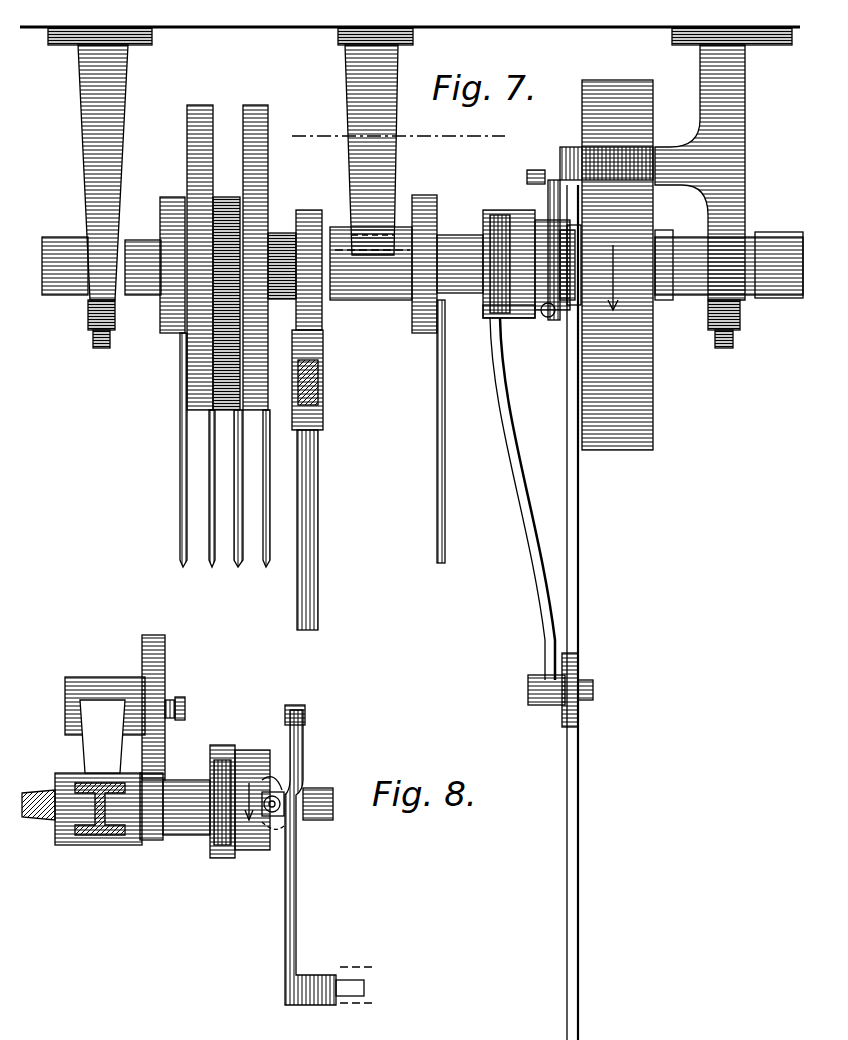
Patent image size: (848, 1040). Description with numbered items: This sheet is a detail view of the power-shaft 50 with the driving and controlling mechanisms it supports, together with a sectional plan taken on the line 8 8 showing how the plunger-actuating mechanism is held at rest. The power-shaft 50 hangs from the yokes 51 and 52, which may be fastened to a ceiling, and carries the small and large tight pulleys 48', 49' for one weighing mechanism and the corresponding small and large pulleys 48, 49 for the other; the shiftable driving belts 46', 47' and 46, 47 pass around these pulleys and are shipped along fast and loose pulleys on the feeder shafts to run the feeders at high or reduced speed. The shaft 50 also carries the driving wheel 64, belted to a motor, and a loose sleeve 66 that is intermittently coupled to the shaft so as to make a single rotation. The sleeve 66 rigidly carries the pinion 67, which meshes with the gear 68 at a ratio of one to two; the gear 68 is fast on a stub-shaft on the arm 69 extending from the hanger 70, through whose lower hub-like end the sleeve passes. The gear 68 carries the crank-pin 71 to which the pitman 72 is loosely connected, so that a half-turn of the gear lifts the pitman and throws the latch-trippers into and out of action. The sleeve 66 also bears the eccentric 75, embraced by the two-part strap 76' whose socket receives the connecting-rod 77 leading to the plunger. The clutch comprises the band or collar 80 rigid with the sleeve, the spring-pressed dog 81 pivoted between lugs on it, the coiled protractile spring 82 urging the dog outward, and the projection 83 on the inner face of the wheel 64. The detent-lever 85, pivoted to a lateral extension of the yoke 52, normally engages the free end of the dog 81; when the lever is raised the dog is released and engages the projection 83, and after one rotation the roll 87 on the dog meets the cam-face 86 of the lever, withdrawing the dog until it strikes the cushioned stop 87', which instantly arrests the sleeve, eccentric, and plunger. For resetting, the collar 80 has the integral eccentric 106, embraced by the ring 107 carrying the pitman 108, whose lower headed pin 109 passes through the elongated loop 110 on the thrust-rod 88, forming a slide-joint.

In FIG. 7, the section line 8 8 is at (397, 137).
In FIG. 7, the driving belt 46 is at (163, 450).
In FIG. 7, the driving belt 46' is at (223, 506).
In FIG. 7, the driving belt 47 is at (176, 488).
In FIG. 7, the driving belt 47' is at (266, 506).
In FIG. 7, the small tight pulley 48 is at (161, 251).
In FIG. 7, the small tight pulley 48' is at (194, 275).
In FIG. 7, the large tight pulley 49 is at (197, 244).
In FIG. 7, the large tight pulley 49' is at (254, 244).
In FIG. 7, the power-shaft 50 is at (45, 272).
In FIG. 8, the power-shaft 50 is at (334, 810).
In FIG. 7, the hanger or yoke 51 is at (90, 140).
In FIG. 7, the hanger or yoke 52 is at (730, 125).
In FIG. 7, the driving wheel or pulley 64 is at (645, 415).
In FIG. 7, the loose sleeve or hub 66 is at (450, 240).
In FIG. 8, the loose sleeve or hub 66 is at (178, 836).
In FIG. 7, the pinion 67 is at (406, 256).
In FIG. 8, the pinion 67 is at (154, 843).
In FIG. 7, the gear 68 is at (425, 335).
In FIG. 8, the gear 68 is at (165, 660).
In FIG. 8, the arm 69 is at (105, 725).
In FIG. 7, the hanger 70 is at (375, 141).
In FIG. 8, the hanger 70 is at (95, 846).
In FIG. 8, the crank or wrist pin 71 is at (186, 707).
In FIG. 7, the pitman or rod 72 is at (440, 434).
In FIG. 8, the pitman or rod 72 is at (174, 700).
In FIG. 7, the eccentric 75 is at (320, 403).
In FIG. 7, the two-part ring or strap 76' is at (325, 307).
In FIG. 7, the connecting-rod 77 is at (318, 522).
In FIG. 7, the band or collar 80 is at (528, 326).
In FIG. 8, the band or collar 80 is at (250, 852).
In FIG. 7, the spring-pressed dog 81 is at (565, 300).
In FIG. 8, the spring-pressed dog 81 is at (275, 794).
In FIG. 7, the coiled protractile spring 82 is at (498, 230).
In FIG. 7, the projection or protuberance 83 is at (572, 252).
In FIG. 7, the detent lever 85 is at (540, 175).
In FIG. 8, the detent lever 85 is at (297, 915).
In FIG. 8, the cam-face 86 is at (298, 778).
In FIG. 8, the roll 87 is at (249, 771).
In FIG. 8, the stop or abutment 87' is at (300, 838).
In FIG. 7, the thrust-rod 88 is at (575, 596).
In FIG. 7, the eccentric 106 is at (487, 312).
In FIG. 8, the eccentric 106 is at (210, 858).
In FIG. 7, the ring 107 is at (487, 210).
In FIG. 8, the ring 107 is at (226, 862).
In FIG. 7, the pitman 108 is at (514, 450).
In FIG. 7, the headed pin or bolt 109 is at (596, 690).
In FIG. 7, the elongated loop 110 is at (556, 690).